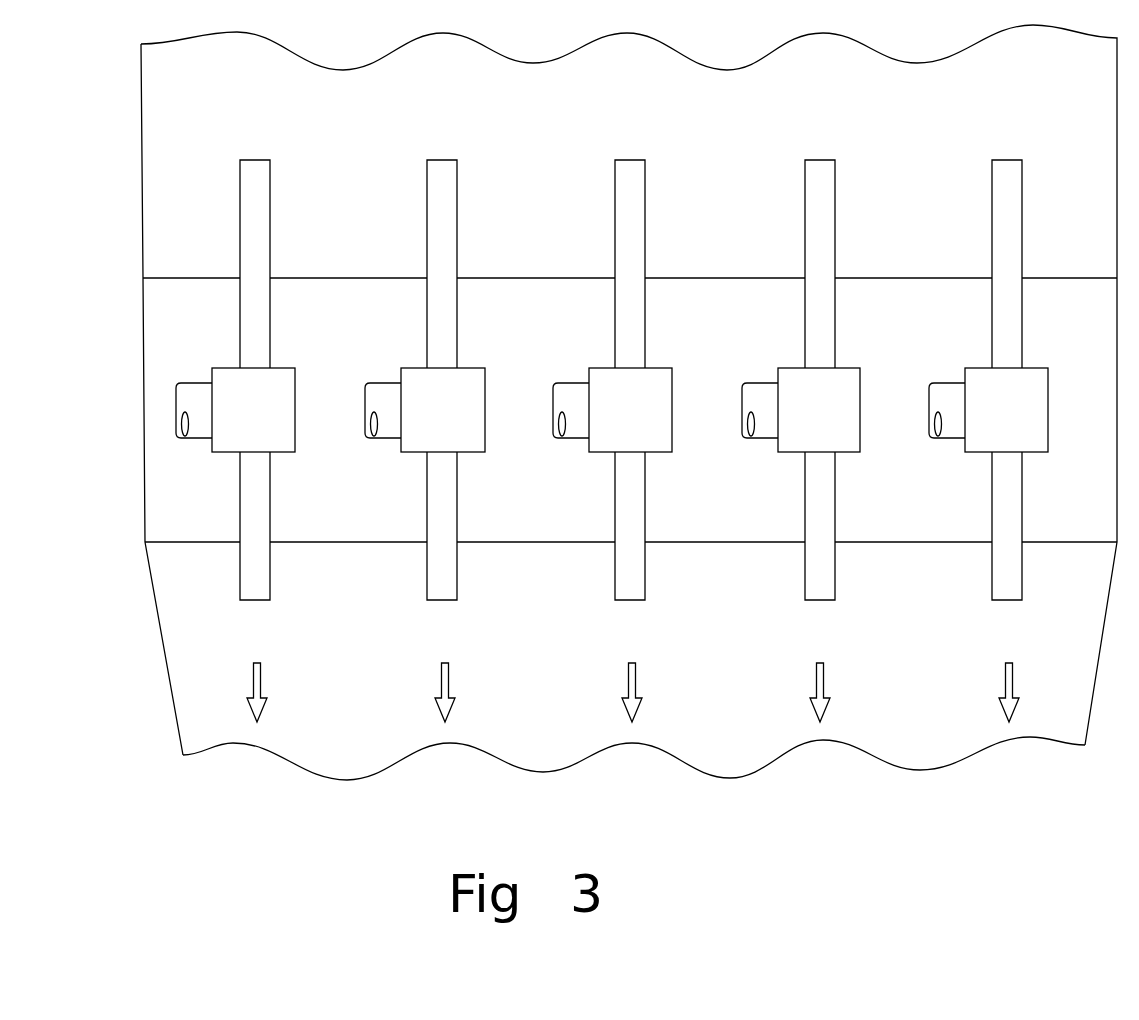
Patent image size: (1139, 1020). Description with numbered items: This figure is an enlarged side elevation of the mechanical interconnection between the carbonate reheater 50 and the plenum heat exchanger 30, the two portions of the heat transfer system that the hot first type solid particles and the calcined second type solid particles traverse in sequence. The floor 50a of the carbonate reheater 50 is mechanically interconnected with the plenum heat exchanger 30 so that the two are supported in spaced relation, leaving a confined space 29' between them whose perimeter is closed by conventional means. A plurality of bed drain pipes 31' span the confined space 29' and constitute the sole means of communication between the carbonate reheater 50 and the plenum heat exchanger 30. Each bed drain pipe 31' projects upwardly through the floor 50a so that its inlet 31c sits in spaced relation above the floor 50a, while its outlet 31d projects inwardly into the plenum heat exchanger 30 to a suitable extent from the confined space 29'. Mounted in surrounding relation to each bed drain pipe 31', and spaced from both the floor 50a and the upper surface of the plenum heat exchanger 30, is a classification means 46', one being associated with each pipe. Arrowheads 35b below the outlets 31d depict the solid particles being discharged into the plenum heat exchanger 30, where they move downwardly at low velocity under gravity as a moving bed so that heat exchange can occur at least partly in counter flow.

The confined space 29' is at (629, 390).
The plenum heat exchanger 30 is at (552, 701).
The carbonate reheater 50 is at (548, 227).
The floor of the carbonate reheater 50a is at (168, 278).
The inlet 31c is at (447, 160).
The bed drain pipes 31' is at (631, 410).
The outlet 31d is at (270, 600).
The classification means 46' is at (612, 388).
The force direction arrows 35b is at (262, 678).